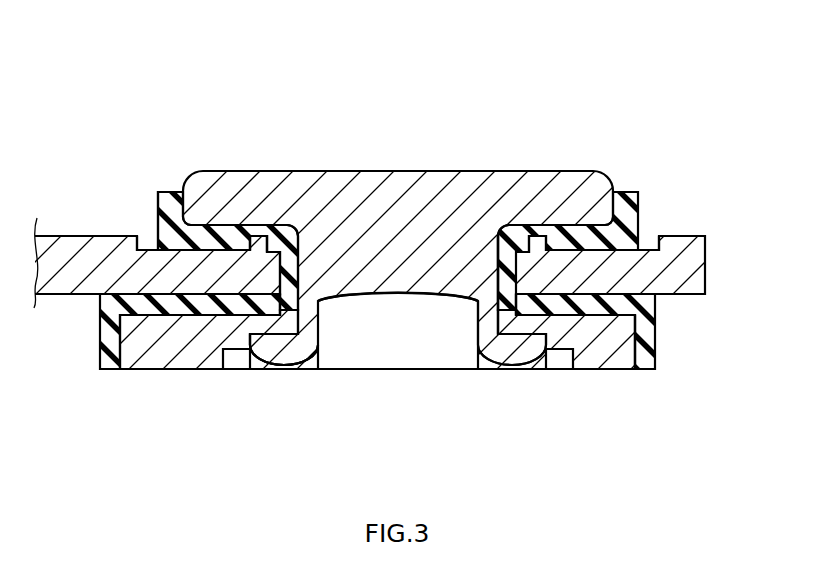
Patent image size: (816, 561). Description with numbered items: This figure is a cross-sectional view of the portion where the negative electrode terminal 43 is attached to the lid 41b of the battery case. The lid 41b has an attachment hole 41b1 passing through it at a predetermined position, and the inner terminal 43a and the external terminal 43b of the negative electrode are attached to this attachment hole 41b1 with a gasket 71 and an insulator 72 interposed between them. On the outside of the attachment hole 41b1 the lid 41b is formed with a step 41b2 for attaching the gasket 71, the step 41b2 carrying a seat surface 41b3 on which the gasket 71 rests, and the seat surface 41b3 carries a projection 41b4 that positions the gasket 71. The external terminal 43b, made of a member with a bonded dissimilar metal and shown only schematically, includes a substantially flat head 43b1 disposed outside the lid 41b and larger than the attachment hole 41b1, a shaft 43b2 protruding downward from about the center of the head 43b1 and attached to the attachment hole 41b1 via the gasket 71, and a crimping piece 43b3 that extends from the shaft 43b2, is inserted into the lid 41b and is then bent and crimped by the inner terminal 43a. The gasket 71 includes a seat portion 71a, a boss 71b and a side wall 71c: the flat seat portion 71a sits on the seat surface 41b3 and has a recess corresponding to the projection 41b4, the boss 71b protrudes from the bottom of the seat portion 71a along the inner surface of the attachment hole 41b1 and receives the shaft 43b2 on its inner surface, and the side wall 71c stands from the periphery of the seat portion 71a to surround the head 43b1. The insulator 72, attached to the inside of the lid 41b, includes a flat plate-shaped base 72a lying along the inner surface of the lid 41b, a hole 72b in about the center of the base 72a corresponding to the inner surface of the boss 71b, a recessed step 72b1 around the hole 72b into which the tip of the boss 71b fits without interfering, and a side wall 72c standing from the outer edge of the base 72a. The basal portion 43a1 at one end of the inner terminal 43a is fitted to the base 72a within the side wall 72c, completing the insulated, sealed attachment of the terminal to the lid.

The negative electrode terminal 43 is at (408, 280).
The inner terminal 43a is at (408, 280).
The basal portion 43a1 is at (158, 372).
The external terminal 43b is at (408, 280).
The head 43b1 is at (463, 172).
The shaft 43b2 is at (488, 320).
The crimping piece 43b3 is at (276, 364).
The lid 41b is at (408, 280).
The attachment hole 41b1 is at (368, 301).
The step 41b2 is at (143, 233).
The seat surface 41b3 is at (613, 249).
The projection 41b4 is at (258, 234).
The gasket 71 is at (438, 263).
The seat portion 71a is at (247, 226).
The boss 71b is at (497, 262).
The side wall 71c is at (202, 208).
The insulator 72 is at (420, 371).
The base 72a is at (588, 312).
The hole 72b is at (520, 304).
The step 72b1 is at (302, 300).
The side wall 72c is at (605, 350).